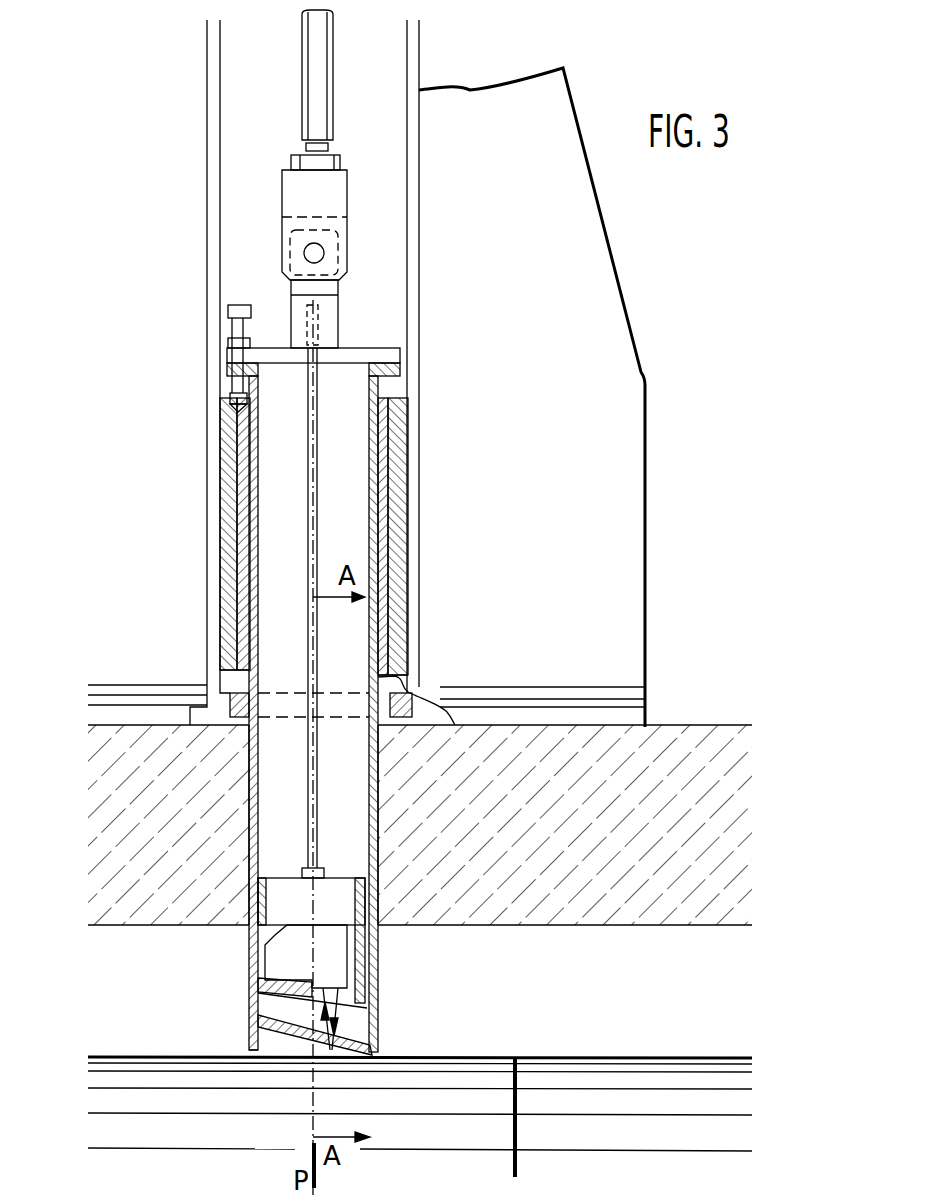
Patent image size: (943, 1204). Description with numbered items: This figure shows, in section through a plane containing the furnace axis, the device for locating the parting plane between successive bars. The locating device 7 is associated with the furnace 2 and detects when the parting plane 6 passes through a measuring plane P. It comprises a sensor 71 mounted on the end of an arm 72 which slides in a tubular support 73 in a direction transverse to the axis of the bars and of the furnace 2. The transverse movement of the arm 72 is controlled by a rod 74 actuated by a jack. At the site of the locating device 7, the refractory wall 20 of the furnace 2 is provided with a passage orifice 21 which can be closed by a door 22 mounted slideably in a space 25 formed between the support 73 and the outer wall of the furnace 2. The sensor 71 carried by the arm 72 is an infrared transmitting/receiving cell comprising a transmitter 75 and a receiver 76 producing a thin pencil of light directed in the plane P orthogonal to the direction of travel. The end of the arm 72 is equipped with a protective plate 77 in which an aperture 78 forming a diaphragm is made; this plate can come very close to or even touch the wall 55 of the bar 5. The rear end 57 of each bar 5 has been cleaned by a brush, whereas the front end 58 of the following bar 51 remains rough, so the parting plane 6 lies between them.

The furnace 2 is at (730, 727).
The bar 5 is at (153, 1055).
The parting plane 6 is at (517, 1078).
The locating device 7 is at (419, 323).
The wall 20 is at (695, 760).
The passage orifice 21 is at (387, 763).
The door 22 is at (404, 676).
The space 25 is at (203, 686).
The following bar 51 is at (619, 1095).
The wall of the bar 55 is at (708, 1058).
The rear end 57 is at (468, 1083).
The front end 58 is at (548, 1082).
The sensor 71 is at (281, 945).
The arm 72 is at (188, 758).
The tubular support 73 is at (220, 498).
The rod 74 is at (313, 95).
The transmitter 75 is at (338, 988).
The receiver 76 is at (262, 968).
The protective plate 77 is at (272, 1036).
The aperture 78 is at (342, 1032).